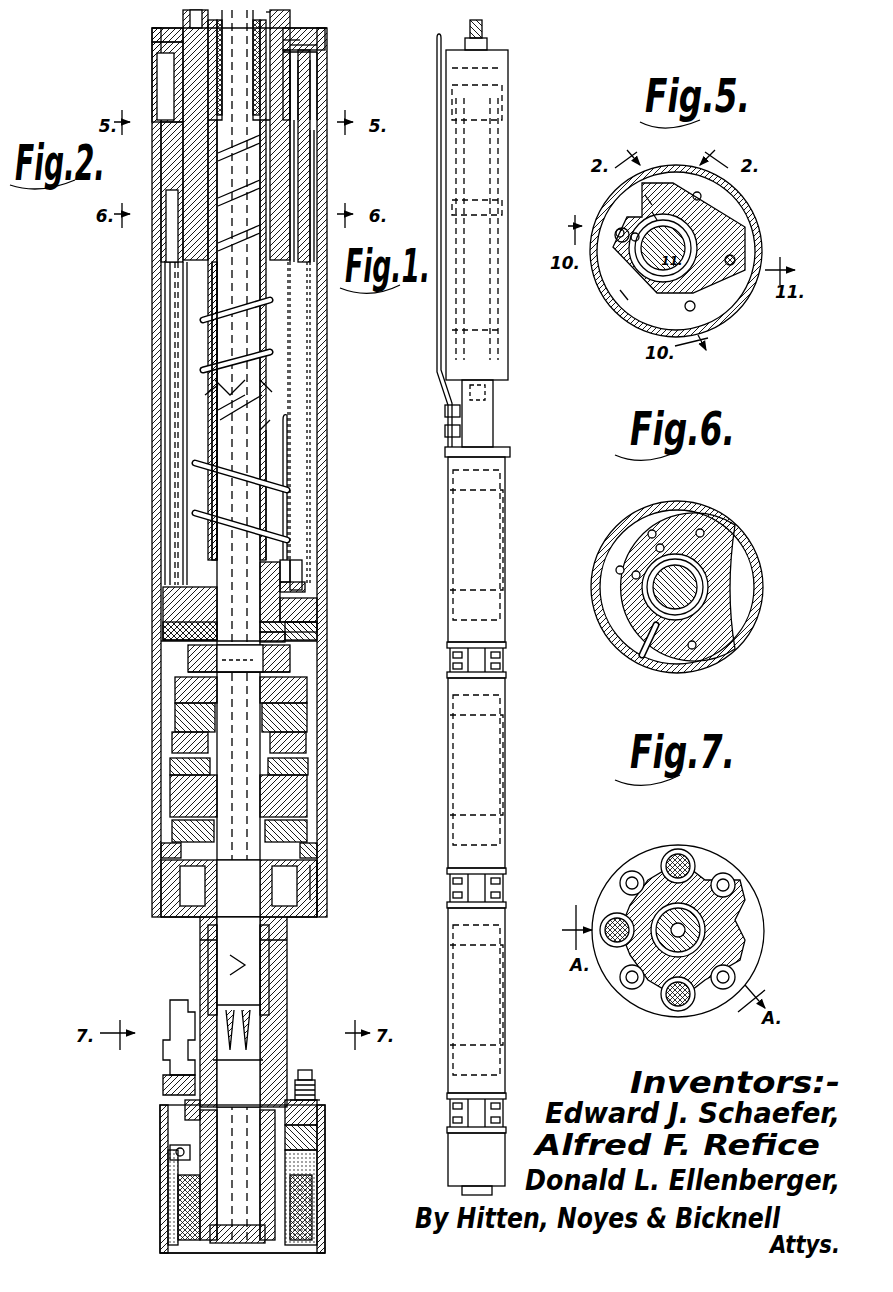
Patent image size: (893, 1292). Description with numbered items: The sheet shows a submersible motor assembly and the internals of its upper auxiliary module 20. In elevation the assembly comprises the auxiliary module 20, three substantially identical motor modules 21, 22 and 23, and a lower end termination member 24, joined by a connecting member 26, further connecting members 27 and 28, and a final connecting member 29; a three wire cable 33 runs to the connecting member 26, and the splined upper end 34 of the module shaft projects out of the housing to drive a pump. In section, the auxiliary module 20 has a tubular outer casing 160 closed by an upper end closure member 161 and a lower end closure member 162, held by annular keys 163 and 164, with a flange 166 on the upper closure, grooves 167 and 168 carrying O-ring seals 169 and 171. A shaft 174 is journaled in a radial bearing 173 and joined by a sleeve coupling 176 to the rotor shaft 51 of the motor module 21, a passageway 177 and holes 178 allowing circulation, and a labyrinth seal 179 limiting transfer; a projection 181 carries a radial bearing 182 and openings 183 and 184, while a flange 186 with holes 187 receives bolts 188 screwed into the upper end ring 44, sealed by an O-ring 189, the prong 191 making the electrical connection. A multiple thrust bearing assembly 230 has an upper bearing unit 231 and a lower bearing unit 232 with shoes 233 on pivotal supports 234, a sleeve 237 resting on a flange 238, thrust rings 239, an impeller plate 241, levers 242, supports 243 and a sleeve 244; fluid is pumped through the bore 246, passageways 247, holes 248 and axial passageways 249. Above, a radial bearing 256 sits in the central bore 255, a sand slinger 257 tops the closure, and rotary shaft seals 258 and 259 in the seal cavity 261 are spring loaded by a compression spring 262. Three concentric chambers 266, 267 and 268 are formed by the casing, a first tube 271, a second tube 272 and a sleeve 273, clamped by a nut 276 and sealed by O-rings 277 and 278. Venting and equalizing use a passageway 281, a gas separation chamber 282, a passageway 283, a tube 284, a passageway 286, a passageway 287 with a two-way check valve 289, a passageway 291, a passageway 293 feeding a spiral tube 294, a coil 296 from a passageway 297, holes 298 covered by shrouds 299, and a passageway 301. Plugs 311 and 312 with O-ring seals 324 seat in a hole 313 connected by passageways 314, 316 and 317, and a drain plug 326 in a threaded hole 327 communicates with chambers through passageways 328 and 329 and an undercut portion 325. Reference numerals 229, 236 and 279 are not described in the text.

In FIG. 2, the auxiliary module 20 is at (140, 407).
In FIG. 1, the auxiliary module 20 is at (511, 182).
In FIG. 5, the auxiliary module 20 is at (756, 200).
In FIG. 6, the auxiliary module 20 is at (755, 553).
In FIG. 2, the motor module 21 is at (158, 1188).
In FIG. 1, the motor module 21 is at (507, 548).
In FIG. 1, the motor module 22 is at (508, 770).
In FIG. 1, the motor module 23 is at (508, 1008).
In FIG. 1, the lower end termination member 24 is at (507, 1155).
In FIG. 2, the connecting member 26 is at (198, 948).
In FIG. 1, the connecting member 26 is at (443, 454).
In FIG. 7, the connecting member 26 is at (766, 918).
In FIG. 1, the connecting member 27 is at (445, 664).
In FIG. 1, the connecting member 28 is at (445, 892).
In FIG. 1, the connecting member 29 is at (445, 1096).
In FIG. 1, the three wire cable 33 is at (434, 380).
In FIG. 1, the upper end of shaft 34 is at (484, 30).
In FIG. 2, the upper end ring 44 is at (302, 1147).
In FIG. 2, the rotor shaft 51 is at (305, 1167).
In FIG. 2, the tubular outer casing 160 is at (325, 470).
In FIG. 2, the upper end closure member 161 is at (150, 30).
In FIG. 5, the upper end closure member 161 is at (758, 225).
In FIG. 2, the lower end closure member 162 is at (290, 945).
In FIG. 2, the annular key 163 is at (320, 887).
In FIG. 2, the annular key 164 is at (316, 86).
In FIG. 2, the flange 166 is at (326, 64).
In FIG. 2, the annular groove 167 is at (328, 102).
In FIG. 2, the annular groove 168 is at (310, 876).
In FIG. 2, the O-ring seal 169 is at (316, 102).
In FIG. 2, the O-ring seal 171 is at (312, 862).
In FIG. 2, the radial bearing 173 is at (270, 958).
In FIG. 2, the shaft 174 is at (224, 585).
In FIG. 5, the shaft 174 is at (645, 268).
In FIG. 6, the shaft 174 is at (640, 660).
In FIG. 7, the shaft 174 is at (700, 945).
In FIG. 2, the sleeve coupling 176 is at (265, 1022).
In FIG. 7, the sleeve coupling 176 is at (690, 872).
In FIG. 2, the fluid passageway 177 is at (165, 1072).
In FIG. 2, the radially extending holes 178 is at (262, 1037).
In FIG. 2, the labyrinth seal 179 is at (275, 1057).
In FIG. 2, the downwardly extending projection 181 is at (305, 1192).
In FIG. 2, the radial bearing 182 is at (305, 1127).
In FIG. 2, the openings 183 is at (195, 1212).
In FIG. 2, the openings 184 is at (205, 1135).
In FIG. 2, the flange 186 is at (318, 1106).
In FIG. 7, the flange 186 is at (735, 977).
In FIG. 2, the holes 187 is at (312, 1092).
In FIG. 2, the bolts 188 is at (300, 1085).
In FIG. 7, the bolts 188 is at (730, 882).
In FIG. 2, the O-ring seal 189 is at (185, 1114).
In FIG. 2, the prong 191 is at (178, 1158).
In FIG. 2, the stator core 229 is at (307, 837).
In FIG. 2, the multiple thrust bearing assembly 230 is at (160, 792).
In FIG. 2, the upper bearing unit 231 is at (178, 722).
In FIG. 2, the lower bearing unit 232 is at (172, 857).
In FIG. 2, the bearing shoes 233 is at (308, 722).
In FIG. 2, the pivotal support 234 is at (306, 752).
In FIG. 2, the end plate 236 is at (170, 897).
In FIG. 2, the sleeve 237 is at (172, 782).
In FIG. 2, the flange 238 is at (165, 877).
In FIG. 2, the thrust ring 239 is at (178, 702).
In FIG. 2, the impeller plate 241 is at (300, 641).
In FIG. 2, the levers 242 is at (292, 674).
In FIG. 2, the support 243 is at (305, 692).
In FIG. 2, the sleeve 244 is at (174, 746).
In FIG. 2, the axially extending bore 246 is at (290, 930).
In FIG. 7, the axially extending bore 246 is at (670, 955).
In FIG. 2, the radially extending passageways 247 is at (192, 657).
In FIG. 2, the radially extending holes 248 is at (285, 657).
In FIG. 2, the axial passageways 249 is at (205, 930).
In FIG. 2, the central bore 255 is at (238, 193).
In FIG. 2, the radial bearing 256 is at (300, 166).
In FIG. 2, the sand slinger 257 is at (272, 26).
In FIG. 2, the rotary shaft seal 258 is at (190, 62).
In FIG. 2, the rotary shaft seal 259 is at (183, 88).
In FIG. 2, the seal cavity 261 is at (160, 78).
In FIG. 2, the compression spring 262 is at (243, 290).
In FIG. 2, the outermost chamber 266 is at (313, 332).
In FIG. 2, the intermediate chamber 267 is at (309, 357).
In FIG. 2, the innermost chamber 268 is at (291, 382).
In FIG. 2, the first cylindrical tube 271 is at (309, 396).
In FIG. 2, the second cylindrical tube 272 is at (288, 427).
In FIG. 2, the sleeve 273 is at (268, 452).
In FIG. 2, the nut 276 is at (255, 637).
In FIG. 2, the O-ring seal 277 is at (239, 189).
In FIG. 2, the O-ring seal 278 is at (252, 592).
In FIG. 2, the ring 279 is at (290, 587).
In FIG. 2, the passageway 281 is at (155, 34).
In FIG. 2, the gas separation chamber 282 is at (172, 156).
In FIG. 5, the gas separation chamber 282 is at (620, 238).
In FIG. 2, the passageway 283 is at (168, 192).
In FIG. 5, the passageway 283 is at (697, 192).
In FIG. 6, the passageway 283 is at (703, 530).
In FIG. 2, the tube 284 is at (185, 332).
In FIG. 2, the passageway 286 is at (170, 607).
In FIG. 5, the passageway 287 is at (665, 310).
In FIG. 5, the two-way check valve 289 is at (696, 308).
In FIG. 5, the passageway 291 is at (615, 232).
In FIG. 6, the passageway 291 is at (616, 568).
In FIG. 2, the passageway 293 is at (165, 262).
In FIG. 2, the tube 294 is at (210, 302).
In FIG. 2, the coil 296 is at (210, 482).
In FIG. 2, the passageway 297 is at (170, 628).
In FIG. 2, the radially extending holes 298 is at (210, 422).
In FIG. 2, the shroud 299 is at (210, 384).
In FIG. 5, the passageway 301 is at (633, 241).
In FIG. 6, the passageway 301 is at (632, 577).
In FIG. 2, the plug 311 is at (312, 46).
In FIG. 5, the plug 312 is at (735, 258).
In FIG. 2, the hole 313 is at (300, 40).
In FIG. 2, the passageway 314 is at (292, 192).
In FIG. 5, the passageway 314 is at (640, 196).
In FIG. 6, the passageway 314 is at (650, 530).
In FIG. 2, the passageway 316 is at (312, 216).
In FIG. 5, the passageway 316 is at (652, 210).
In FIG. 6, the passageway 316 is at (655, 548).
In FIG. 2, the passageway 317 is at (232, 290).
In FIG. 2, the O-ring seal 324 is at (312, 59).
In FIG. 2, the undercut portion 325 is at (300, 606).
In FIG. 2, the plug 326 is at (297, 622).
In FIG. 2, the threaded hole 327 is at (271, 622).
In FIG. 2, the passageway 328 is at (300, 572).
In FIG. 2, the passageway 329 is at (290, 557).